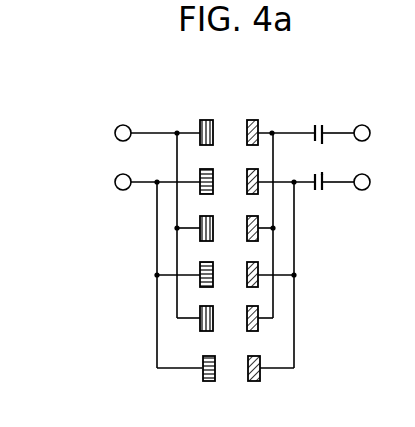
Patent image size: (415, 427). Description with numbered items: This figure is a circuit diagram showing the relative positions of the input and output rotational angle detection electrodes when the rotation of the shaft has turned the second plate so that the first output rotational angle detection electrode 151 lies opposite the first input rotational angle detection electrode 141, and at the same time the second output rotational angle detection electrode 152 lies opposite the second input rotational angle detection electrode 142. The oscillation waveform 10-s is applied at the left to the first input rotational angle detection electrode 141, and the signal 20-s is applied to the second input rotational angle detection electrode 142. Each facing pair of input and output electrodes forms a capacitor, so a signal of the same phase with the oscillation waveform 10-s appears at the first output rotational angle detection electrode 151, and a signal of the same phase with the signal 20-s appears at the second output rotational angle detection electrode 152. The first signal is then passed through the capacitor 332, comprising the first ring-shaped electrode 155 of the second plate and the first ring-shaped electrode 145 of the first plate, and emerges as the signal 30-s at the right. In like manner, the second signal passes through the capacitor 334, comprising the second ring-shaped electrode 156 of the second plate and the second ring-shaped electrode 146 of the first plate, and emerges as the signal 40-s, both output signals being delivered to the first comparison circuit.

The oscillation waveform 10-s is at (115, 125).
The signal 20-s is at (113, 176).
The signal 30-s is at (376, 113).
The signal 40-s is at (367, 189).
The first input rotational angle detection electrode 141 is at (204, 119).
The second input rotational angle detection electrode 142 is at (208, 383).
The first output rotational angle detection electrode 151 is at (251, 119).
The second output rotational angle detection electrode 152 is at (252, 383).
The first ring-shaped electrode of the first plate 145 is at (324, 126).
The second ring-shaped electrode of the first plate 146 is at (325, 190).
The first ring-shaped electrode of the second plate 155 is at (313, 126).
The second ring-shaped electrode of the second plate 156 is at (313, 190).
The capacitor 332 is at (321, 144).
The capacitor 334 is at (323, 158).